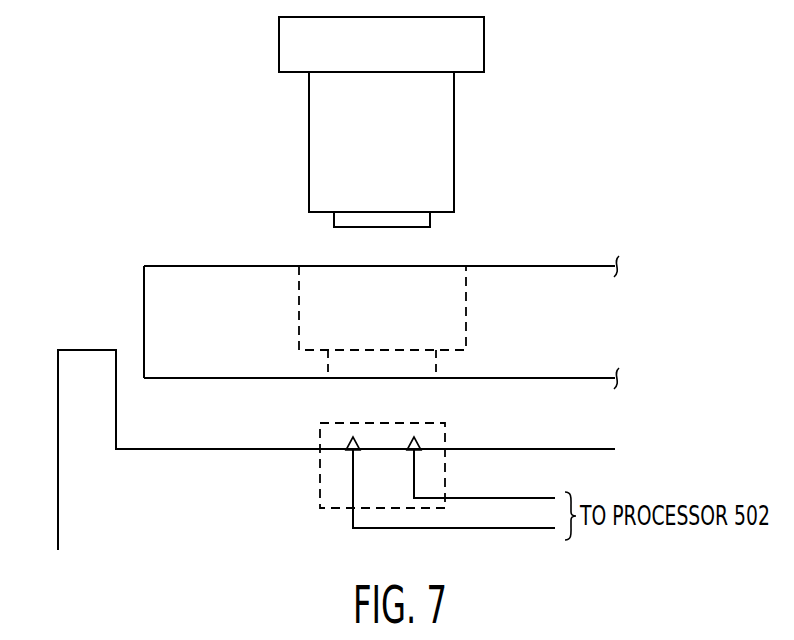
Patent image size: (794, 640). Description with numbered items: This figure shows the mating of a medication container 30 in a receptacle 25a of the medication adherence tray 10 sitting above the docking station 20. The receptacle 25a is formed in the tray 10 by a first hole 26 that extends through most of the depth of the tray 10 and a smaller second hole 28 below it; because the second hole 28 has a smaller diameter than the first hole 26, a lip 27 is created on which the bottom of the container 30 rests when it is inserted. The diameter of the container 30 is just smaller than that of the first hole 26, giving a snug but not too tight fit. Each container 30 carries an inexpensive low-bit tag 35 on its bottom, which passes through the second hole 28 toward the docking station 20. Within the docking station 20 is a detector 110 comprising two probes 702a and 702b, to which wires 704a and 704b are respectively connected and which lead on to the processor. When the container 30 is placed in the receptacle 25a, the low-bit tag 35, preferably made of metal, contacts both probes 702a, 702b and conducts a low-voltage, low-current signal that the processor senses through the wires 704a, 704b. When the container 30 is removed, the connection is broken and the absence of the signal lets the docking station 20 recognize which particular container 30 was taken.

The container 30 is at (454, 145).
The low-bit tag 35 is at (335, 222).
The medication tray 10 is at (583, 266).
The receptacle 25a is at (430, 272).
The first hole 26 is at (466, 318).
The lip 27 is at (446, 352).
The second hole 28 is at (328, 362).
The docking station 20 is at (58, 420).
The detector 110 is at (320, 498).
The probe 702a is at (347, 444).
The probe 702b is at (421, 444).
The wire 704a is at (487, 529).
The wire 704b is at (487, 498).